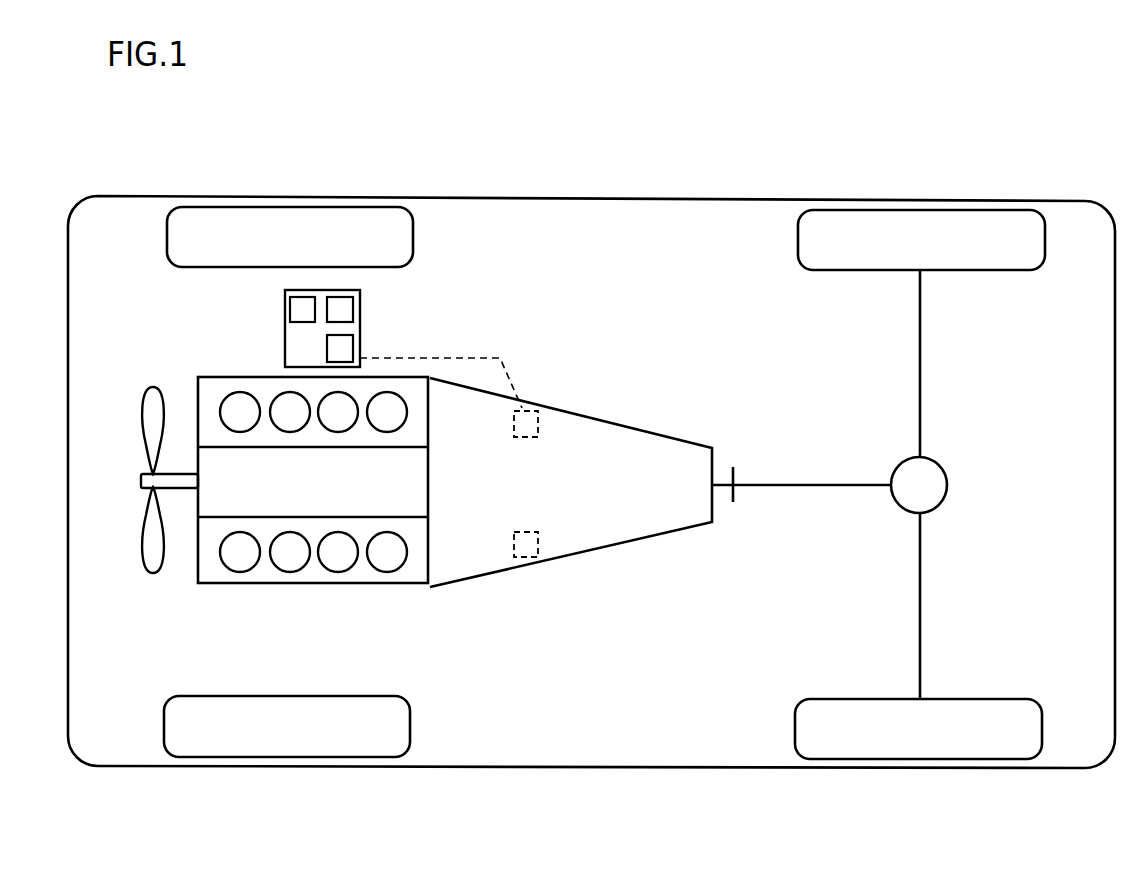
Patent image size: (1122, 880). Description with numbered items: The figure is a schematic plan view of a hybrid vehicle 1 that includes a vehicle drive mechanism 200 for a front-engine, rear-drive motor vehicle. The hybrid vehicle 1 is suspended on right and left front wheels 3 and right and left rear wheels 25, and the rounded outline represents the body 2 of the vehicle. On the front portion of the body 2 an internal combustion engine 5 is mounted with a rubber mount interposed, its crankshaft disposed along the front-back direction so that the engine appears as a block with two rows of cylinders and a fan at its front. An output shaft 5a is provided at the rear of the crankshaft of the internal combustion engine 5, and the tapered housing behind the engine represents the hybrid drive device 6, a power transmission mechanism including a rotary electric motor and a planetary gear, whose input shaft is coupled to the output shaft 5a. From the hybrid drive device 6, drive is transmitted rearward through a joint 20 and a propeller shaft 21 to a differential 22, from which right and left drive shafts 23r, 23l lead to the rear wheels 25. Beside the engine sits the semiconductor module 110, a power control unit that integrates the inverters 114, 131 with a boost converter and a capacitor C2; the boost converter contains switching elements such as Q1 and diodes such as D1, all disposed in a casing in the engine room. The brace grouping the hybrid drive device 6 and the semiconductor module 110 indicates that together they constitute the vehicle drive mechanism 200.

The hybrid vehicle 1 is at (477, 161).
The body 2 is at (686, 197).
The front wheels 3 is at (286, 227).
The internal combustion engine 5 is at (261, 375).
The output shaft 5a is at (433, 478).
The hybrid drive device 6 is at (539, 398).
The coupling joint 20 is at (736, 476).
The propeller shaft 21 is at (815, 482).
The differential gear 22 is at (947, 485).
The right drive shaft 23r is at (920, 358).
The left drive shaft 23l is at (920, 612).
The rear wheels 25 is at (930, 232).
The semiconductor module 110 is at (447, 306).
The inverter 114 is at (343, 308).
The inverter 131 is at (343, 348).
The vehicle drive mechanism 200 is at (577, 273).
The capacitor C2 is at (533, 551).
The diode D1 is at (300, 305).
The switching element Q1 is at (167, 313).